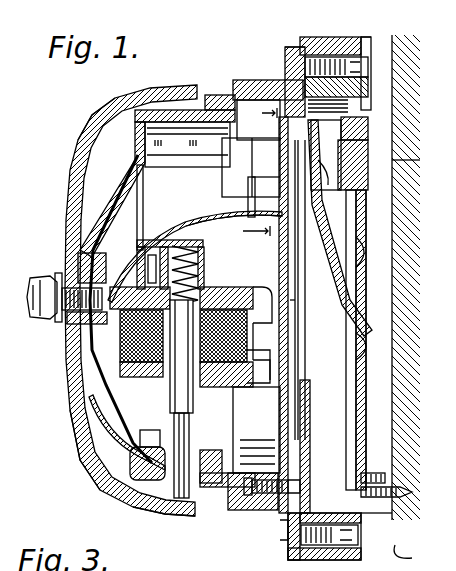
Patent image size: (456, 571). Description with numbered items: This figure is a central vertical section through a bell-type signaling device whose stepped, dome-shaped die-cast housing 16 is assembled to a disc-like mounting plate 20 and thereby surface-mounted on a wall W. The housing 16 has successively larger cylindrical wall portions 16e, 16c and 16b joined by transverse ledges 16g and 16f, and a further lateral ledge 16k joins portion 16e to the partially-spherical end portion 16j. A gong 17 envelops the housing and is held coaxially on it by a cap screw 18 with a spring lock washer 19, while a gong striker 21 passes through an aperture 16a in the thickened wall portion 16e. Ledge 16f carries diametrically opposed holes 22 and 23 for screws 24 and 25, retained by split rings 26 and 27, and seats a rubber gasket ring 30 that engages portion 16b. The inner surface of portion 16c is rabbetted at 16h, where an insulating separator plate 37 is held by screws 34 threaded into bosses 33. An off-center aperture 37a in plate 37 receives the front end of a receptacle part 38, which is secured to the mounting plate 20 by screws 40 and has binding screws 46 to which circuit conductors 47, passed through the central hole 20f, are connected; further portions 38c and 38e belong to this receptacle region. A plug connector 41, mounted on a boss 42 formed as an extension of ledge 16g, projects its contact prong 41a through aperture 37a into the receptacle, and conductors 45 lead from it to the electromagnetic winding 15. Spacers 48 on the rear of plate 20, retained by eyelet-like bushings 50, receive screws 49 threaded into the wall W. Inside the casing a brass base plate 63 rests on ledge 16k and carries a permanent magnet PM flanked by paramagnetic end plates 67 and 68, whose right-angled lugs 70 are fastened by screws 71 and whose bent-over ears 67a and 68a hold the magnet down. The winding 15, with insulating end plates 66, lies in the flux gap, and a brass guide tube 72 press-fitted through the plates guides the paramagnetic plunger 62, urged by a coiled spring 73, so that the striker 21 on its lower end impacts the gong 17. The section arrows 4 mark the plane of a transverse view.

The housing 16 is at (97, 405).
The aperture 16a is at (235, 490).
The cylindrical wall portion 16b is at (358, 42).
The cylindrical wall portion 16c is at (222, 96).
The cylindrical wall portion 16e is at (170, 110).
The annular wall portion 16f is at (292, 48).
The annular wall portion 16g is at (228, 102).
The step or rabbet 16h is at (247, 80).
The end partially-spherical portion 16j is at (112, 200).
The lateral wall portion 16k is at (120, 124).
The gong 17 is at (84, 462).
The cap screw 18 is at (54, 316).
The spring lock washer 19 is at (58, 273).
The mounting plate 20 is at (290, 402).
The central round hole 20f is at (403, 352).
The gong striker 21 is at (172, 500).
The hole 22 is at (316, 50).
The hole 23 is at (300, 549).
The screw 24 is at (305, 66).
The screw 25 is at (284, 552).
The split ring 26 is at (298, 58).
The split ring 27 is at (292, 528).
The gasket ring 30 is at (330, 46).
The bosses 33 is at (266, 481).
The screws 34 is at (292, 481).
The separator plate 37 is at (299, 336).
The aperture 37a is at (234, 228).
The receptacle part 38 is at (356, 126).
The pivot block portion 38c is at (423, 152).
The pivot pin 38e is at (328, 169).
The screws 40 is at (366, 150).
The plug connector element 41 is at (244, 174).
The contact prong 41a is at (266, 181).
The boss 42 is at (143, 195).
The conductors 45 is at (170, 186).
The binding screws 46 is at (308, 170).
The conductors 47 is at (378, 324).
The spacer 48 is at (392, 224).
The screws 49 is at (414, 198).
The bushing 50 is at (380, 514).
The plunger 62 is at (186, 380).
The base plate 63 is at (230, 216).
The insulating end plates 66 is at (137, 292).
The end plate 67 is at (258, 290).
The bent-over ear 67a is at (290, 306).
The end plate 68 is at (256, 385).
The bent-over ear 68a is at (268, 366).
The right-angled lugs 70 is at (133, 250).
The screws 71 is at (147, 455).
The guide tube 72 is at (238, 442).
The coiled spring 73 is at (186, 245).
The permanent magnet PM is at (300, 326).
The wall W is at (406, 296).
The section line 4 is at (258, 177).
The electromagnetic winding 15 is at (186, 389).